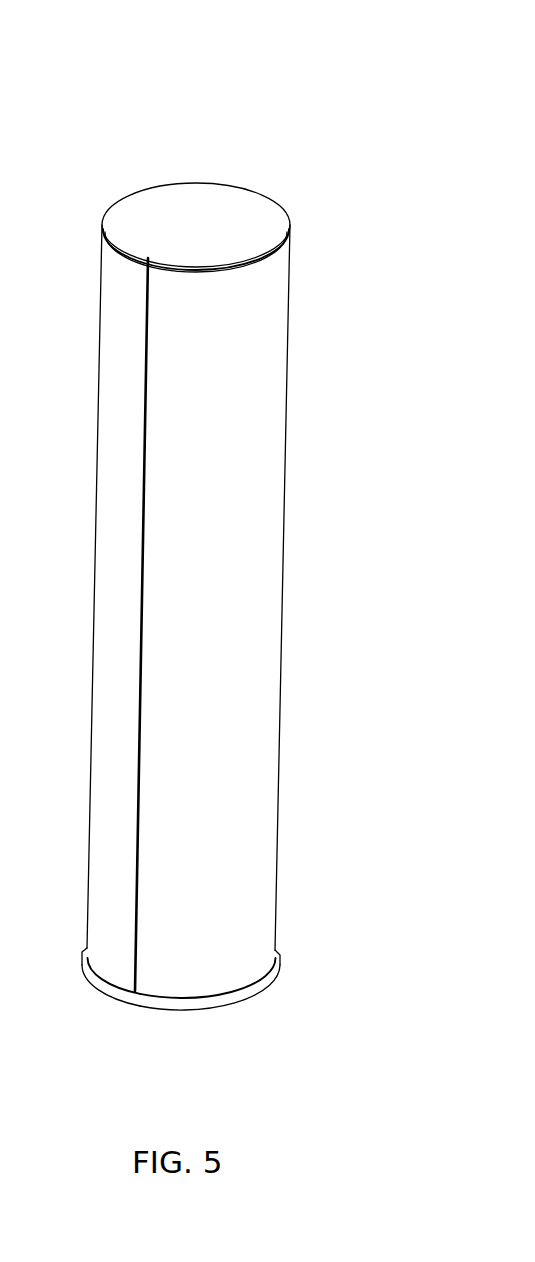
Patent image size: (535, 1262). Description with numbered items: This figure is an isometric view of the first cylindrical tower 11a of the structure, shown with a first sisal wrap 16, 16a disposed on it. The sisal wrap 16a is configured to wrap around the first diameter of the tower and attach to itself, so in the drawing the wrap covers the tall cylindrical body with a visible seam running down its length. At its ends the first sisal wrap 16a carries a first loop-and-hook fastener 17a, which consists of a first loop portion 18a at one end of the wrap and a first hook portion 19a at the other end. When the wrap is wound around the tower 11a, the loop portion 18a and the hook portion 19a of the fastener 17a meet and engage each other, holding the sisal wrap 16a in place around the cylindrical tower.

The sleeve assembly 11a is at (209, 119).
The tubular body 16 is at (250, 587).
The first sisal wrap 16a is at (242, 543).
The first loop-and-hook fastener 17a is at (207, 1000).
The first loop portion 18a is at (128, 910).
The first hook portion 19a is at (145, 910).